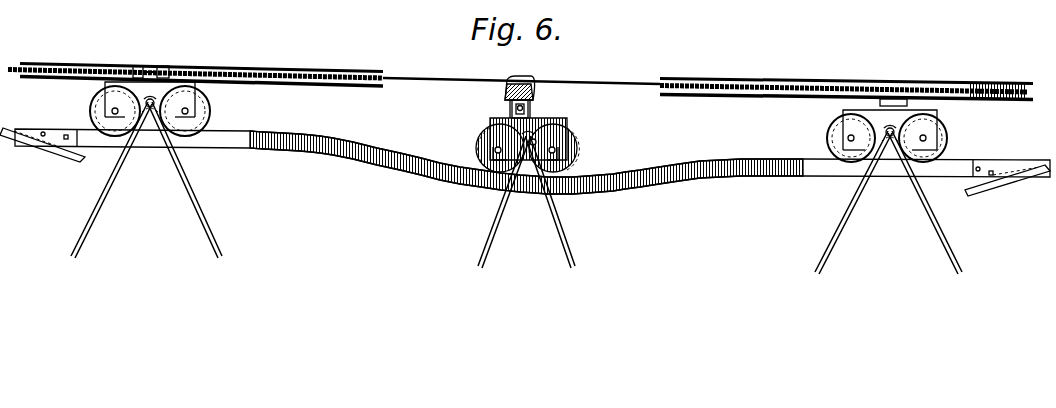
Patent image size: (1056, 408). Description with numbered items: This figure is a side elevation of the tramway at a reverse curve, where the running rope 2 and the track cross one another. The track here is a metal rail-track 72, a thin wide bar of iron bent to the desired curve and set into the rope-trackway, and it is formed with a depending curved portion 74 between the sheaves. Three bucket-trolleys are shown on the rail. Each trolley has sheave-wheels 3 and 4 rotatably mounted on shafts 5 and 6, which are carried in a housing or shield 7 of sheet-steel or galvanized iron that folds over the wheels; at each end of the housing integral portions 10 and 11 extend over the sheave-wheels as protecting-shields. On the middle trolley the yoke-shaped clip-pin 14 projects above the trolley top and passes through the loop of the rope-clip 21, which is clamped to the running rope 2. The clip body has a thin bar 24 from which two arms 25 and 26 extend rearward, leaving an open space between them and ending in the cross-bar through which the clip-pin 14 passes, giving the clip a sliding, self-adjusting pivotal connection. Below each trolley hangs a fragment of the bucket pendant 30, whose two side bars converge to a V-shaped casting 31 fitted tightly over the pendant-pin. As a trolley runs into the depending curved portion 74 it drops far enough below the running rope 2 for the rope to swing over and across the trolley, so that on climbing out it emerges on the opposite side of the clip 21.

The running rope 2 is at (590, 80).
The sheave-wheel 3 is at (90, 106).
The sheave-wheel 4 is at (210, 107).
The shaft 5 is at (113, 110).
The shaft 6 is at (187, 111).
The housing or shield 7 is at (165, 84).
The integral portion 10 is at (104, 84).
The integral portion 11 is at (197, 85).
The clip-pin 14 is at (152, 66).
The rope-clip 21 is at (523, 80).
The bar 24 is at (506, 93).
The arm 25 is at (512, 110).
The arm 26 is at (532, 105).
The pendant 30 is at (93, 220).
The V-shaped casting 31 is at (150, 112).
The metal rail-track 72 is at (803, 180).
The depending curved portion 74 is at (583, 190).